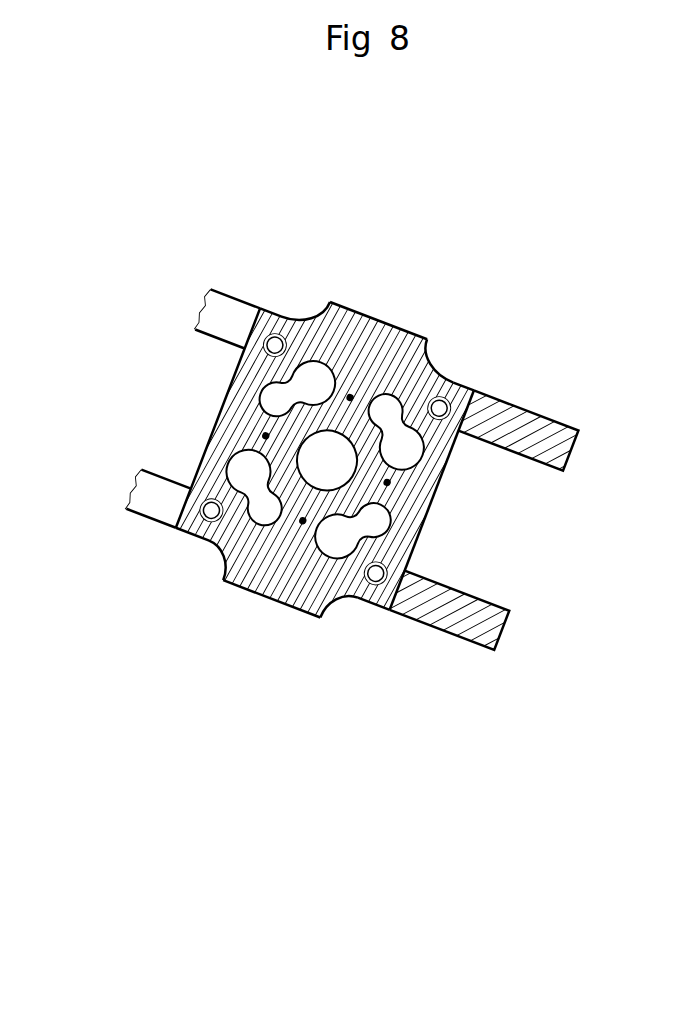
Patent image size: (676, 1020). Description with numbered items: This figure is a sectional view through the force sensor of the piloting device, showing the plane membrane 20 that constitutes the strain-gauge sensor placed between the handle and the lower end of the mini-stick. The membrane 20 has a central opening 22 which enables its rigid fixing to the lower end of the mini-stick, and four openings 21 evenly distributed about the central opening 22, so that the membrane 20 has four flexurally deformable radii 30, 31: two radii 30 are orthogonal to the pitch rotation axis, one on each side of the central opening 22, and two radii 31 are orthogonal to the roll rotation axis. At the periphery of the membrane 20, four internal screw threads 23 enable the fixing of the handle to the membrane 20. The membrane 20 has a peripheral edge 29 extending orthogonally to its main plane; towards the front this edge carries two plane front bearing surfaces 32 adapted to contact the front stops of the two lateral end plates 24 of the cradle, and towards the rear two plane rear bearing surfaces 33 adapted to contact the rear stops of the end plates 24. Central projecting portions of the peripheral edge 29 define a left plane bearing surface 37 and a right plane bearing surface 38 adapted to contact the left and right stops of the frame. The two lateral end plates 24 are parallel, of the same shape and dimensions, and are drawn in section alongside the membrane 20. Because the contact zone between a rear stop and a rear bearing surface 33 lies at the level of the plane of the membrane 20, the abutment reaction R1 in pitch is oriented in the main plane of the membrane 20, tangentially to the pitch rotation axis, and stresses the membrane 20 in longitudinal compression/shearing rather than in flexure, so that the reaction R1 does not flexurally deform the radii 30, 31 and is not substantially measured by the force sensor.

The plane membrane 20 is at (245, 395).
The openings 21 is at (297, 383).
The central opening 22 is at (327, 460).
The internal screw threads 23 is at (275, 343).
The lateral end plates 24 is at (546, 433).
The peripheral edge 29 is at (429, 510).
The flexurally deformable radii 30 is at (266, 436).
The flexurally deformable radii 31 is at (350, 397).
The front contact bearing surface 32 is at (257, 320).
The rear contact bearing surface 33 is at (474, 412).
The left contact bearing surface 37 is at (243, 588).
The right contact bearing surface 38 is at (397, 324).
The abutment reaction R1 is at (360, 645).